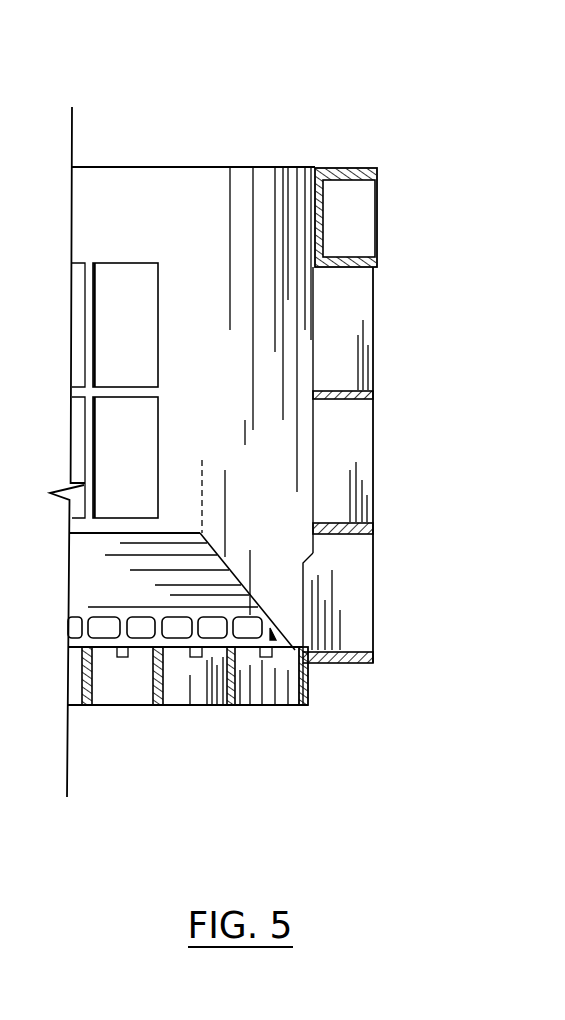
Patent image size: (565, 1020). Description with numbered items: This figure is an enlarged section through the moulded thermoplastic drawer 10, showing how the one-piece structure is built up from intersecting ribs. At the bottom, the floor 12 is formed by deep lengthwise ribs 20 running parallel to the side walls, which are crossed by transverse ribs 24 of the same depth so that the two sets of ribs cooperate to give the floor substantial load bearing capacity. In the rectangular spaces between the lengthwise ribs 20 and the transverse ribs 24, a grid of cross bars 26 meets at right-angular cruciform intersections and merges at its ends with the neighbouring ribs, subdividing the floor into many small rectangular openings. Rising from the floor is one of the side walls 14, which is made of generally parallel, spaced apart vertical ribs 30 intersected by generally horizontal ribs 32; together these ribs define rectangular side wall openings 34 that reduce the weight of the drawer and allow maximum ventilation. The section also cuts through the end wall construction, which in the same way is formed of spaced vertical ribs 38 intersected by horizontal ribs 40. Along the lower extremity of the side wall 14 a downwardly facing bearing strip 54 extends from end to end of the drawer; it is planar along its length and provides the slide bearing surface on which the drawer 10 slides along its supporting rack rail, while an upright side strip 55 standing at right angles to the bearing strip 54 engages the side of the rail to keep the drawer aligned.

The drawer 10 is at (235, 158).
The floor 12 is at (172, 735).
The side walls 14 is at (393, 388).
The lengthwise ribs 20 is at (91, 675).
The transverse ribs 24 is at (212, 707).
The cross bars 26 is at (276, 707).
The vertical ribs 30 is at (370, 430).
The horizontal ribs 32 is at (323, 399).
The side wall openings 34 is at (332, 320).
The vertical ribs 38 is at (97, 418).
The horizontal ribs 40 is at (119, 387).
The bearing strips 54 is at (327, 666).
The upright side strips 55 is at (311, 692).